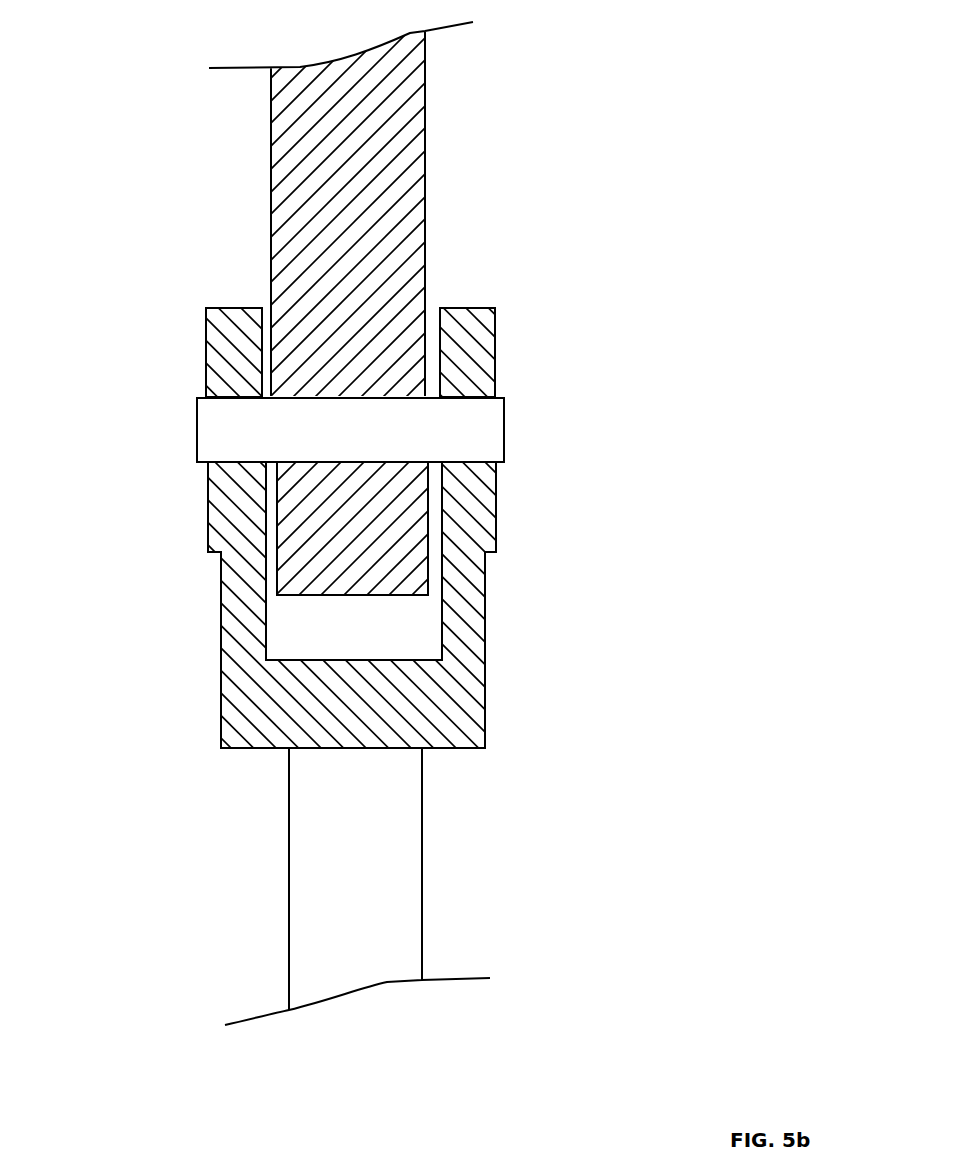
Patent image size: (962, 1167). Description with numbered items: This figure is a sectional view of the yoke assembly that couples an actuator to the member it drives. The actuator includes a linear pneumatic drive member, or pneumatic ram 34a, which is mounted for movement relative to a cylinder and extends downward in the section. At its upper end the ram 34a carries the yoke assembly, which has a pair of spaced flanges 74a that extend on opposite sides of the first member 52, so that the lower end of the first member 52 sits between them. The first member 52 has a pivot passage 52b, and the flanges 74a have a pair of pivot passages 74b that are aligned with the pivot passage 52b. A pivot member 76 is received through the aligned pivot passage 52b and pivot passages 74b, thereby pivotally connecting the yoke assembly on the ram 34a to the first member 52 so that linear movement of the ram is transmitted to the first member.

The first member 52 is at (370, 220).
The pivot passage 52b is at (335, 397).
The pivot passages 74b is at (460, 395).
The flanges 74a is at (228, 563).
The pivot member 76 is at (225, 441).
The pneumatic ram 34a is at (303, 825).